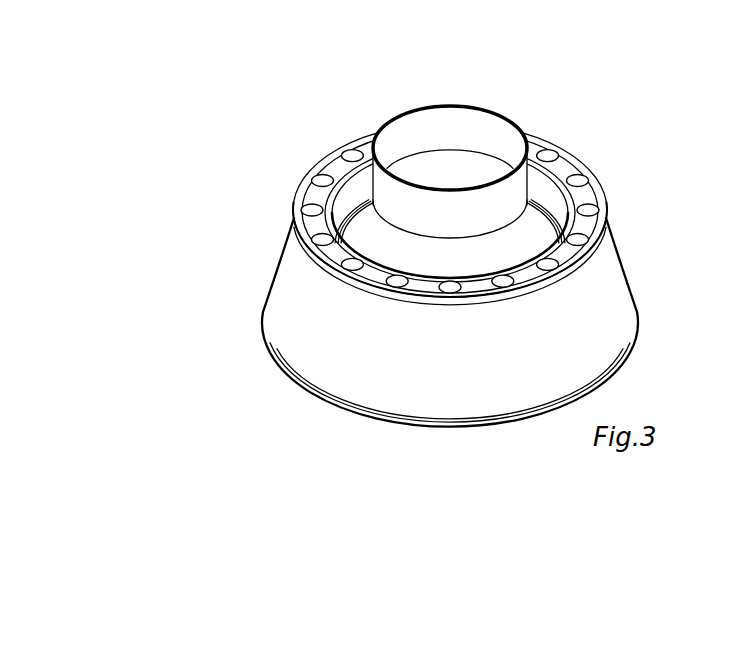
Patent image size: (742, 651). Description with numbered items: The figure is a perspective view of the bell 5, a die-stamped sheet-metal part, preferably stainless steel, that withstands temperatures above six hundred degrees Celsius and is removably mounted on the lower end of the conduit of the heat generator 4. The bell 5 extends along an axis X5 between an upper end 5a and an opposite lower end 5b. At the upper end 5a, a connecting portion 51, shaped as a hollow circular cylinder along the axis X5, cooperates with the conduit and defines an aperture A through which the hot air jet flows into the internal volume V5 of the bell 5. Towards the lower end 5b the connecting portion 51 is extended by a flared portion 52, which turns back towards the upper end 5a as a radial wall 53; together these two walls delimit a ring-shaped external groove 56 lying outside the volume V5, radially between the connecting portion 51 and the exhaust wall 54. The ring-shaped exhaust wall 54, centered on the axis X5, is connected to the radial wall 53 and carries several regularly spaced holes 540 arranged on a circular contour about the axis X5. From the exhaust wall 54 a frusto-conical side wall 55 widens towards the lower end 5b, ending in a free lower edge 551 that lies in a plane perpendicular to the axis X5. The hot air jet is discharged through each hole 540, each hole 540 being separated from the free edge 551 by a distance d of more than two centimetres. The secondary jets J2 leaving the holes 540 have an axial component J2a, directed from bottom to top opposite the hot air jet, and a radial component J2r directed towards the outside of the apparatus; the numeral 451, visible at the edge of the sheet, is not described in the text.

The bell 5 is at (430, 253).
The upper end of the bell 5a is at (413, 112).
The lower end of the bell 5b is at (640, 314).
The connecting portion 51 is at (484, 123).
The flared portion 52 is at (587, 193).
The radial wall 53 is at (545, 195).
The exhaust wall 54 is at (602, 190).
The side wall 55 is at (612, 263).
The external groove 56 is at (478, 260).
The holes 540 is at (388, 283).
The lower edge 551 is at (333, 412).
The axis of the bell X5 is at (452, 475).
The aperture A is at (430, 122).
The secondary jets J2 is at (298, 122).
The axial component J2a is at (357, 157).
The radial component J2r is at (352, 156).
The internal volume V5 is at (505, 440).
The distance d is at (262, 317).
The heat generator 4 is at (623, 5).
The adjacent element (partial) 451 is at (697, 8).